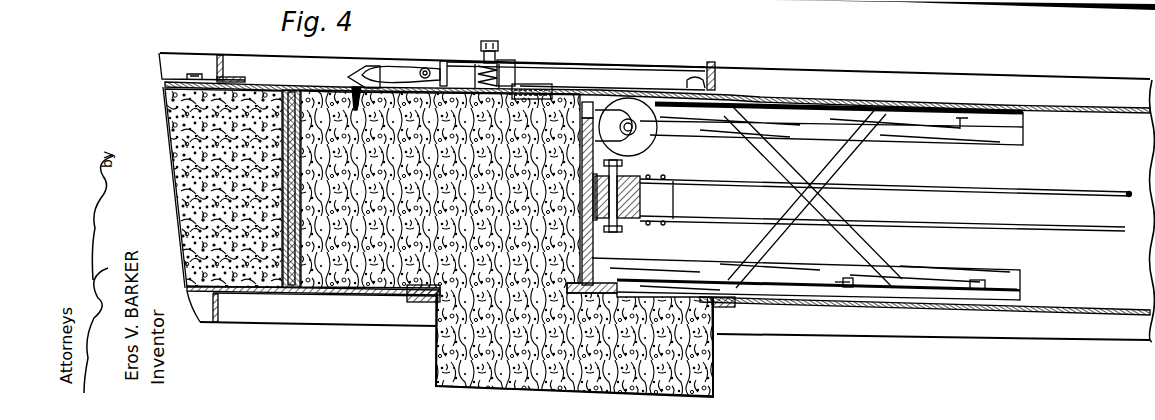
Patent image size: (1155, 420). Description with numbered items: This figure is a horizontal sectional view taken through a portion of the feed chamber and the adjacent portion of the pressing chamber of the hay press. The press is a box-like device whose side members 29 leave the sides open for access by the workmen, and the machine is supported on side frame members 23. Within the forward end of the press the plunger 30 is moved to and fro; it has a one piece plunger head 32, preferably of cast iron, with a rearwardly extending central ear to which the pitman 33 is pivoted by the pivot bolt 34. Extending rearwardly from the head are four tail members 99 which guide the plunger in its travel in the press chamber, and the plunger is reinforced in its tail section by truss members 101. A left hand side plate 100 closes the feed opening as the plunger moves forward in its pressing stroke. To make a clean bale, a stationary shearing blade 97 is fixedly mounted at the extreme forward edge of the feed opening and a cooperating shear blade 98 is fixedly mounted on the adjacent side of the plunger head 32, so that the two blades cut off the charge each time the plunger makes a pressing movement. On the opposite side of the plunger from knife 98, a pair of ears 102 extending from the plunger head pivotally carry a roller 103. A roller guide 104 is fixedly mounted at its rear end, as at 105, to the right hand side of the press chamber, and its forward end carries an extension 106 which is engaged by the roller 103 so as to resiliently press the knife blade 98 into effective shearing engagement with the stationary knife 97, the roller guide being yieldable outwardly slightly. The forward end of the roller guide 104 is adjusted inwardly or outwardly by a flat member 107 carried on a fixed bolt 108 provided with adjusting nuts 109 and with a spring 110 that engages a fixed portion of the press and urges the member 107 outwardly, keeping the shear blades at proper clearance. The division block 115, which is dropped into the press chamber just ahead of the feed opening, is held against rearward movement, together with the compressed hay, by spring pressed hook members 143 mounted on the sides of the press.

The side frame members 23 is at (1130, 108).
The side members 29 is at (182, 74).
The press plunger 30 is at (650, 246).
The plunger head 32 is at (594, 249).
The pitman 33 is at (760, 182).
The pivot bolt 34 is at (632, 169).
The stationary shearing blade 97 is at (405, 292).
The shear blade 98 is at (664, 300).
The tail members 99 is at (1020, 135).
The left hand side plate 100 is at (838, 252).
The truss members 101 is at (832, 216).
The ears 102 is at (650, 124).
The roller 103 is at (700, 128).
The roller guide 104 is at (648, 59).
The rear end mounting 105 is at (706, 72).
The extension 106 is at (545, 92).
The flat member 107 is at (516, 64).
The fixed bolt 108 is at (481, 49).
The adjusting nuts 109 is at (497, 55).
The spring 110 is at (477, 73).
The division block 115 is at (317, 72).
The spring pressed hook members 143 is at (357, 72).